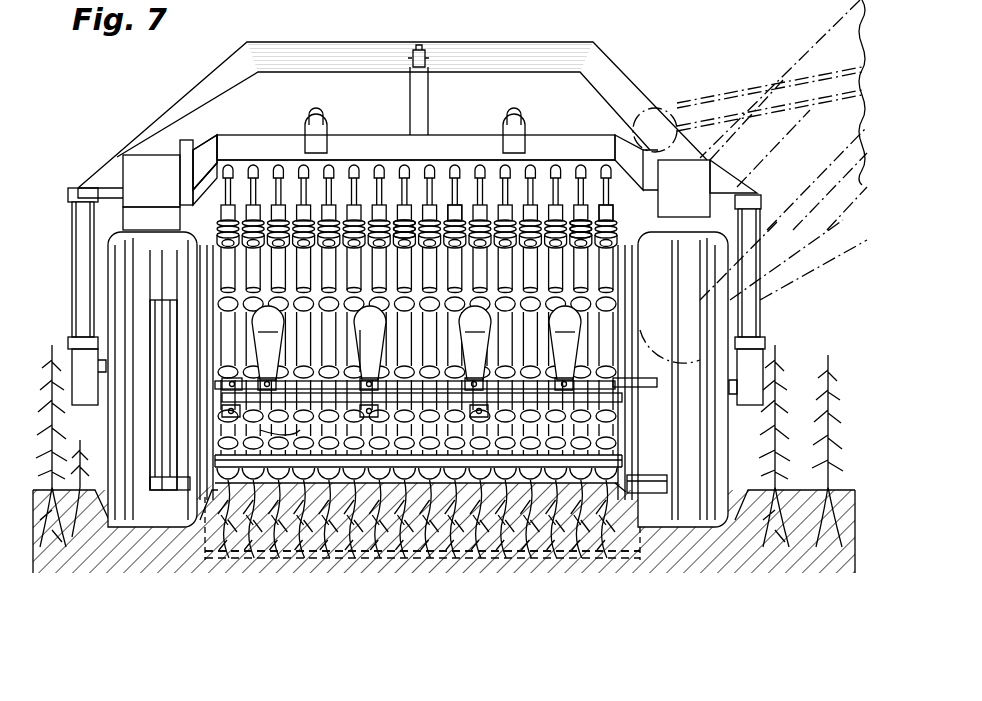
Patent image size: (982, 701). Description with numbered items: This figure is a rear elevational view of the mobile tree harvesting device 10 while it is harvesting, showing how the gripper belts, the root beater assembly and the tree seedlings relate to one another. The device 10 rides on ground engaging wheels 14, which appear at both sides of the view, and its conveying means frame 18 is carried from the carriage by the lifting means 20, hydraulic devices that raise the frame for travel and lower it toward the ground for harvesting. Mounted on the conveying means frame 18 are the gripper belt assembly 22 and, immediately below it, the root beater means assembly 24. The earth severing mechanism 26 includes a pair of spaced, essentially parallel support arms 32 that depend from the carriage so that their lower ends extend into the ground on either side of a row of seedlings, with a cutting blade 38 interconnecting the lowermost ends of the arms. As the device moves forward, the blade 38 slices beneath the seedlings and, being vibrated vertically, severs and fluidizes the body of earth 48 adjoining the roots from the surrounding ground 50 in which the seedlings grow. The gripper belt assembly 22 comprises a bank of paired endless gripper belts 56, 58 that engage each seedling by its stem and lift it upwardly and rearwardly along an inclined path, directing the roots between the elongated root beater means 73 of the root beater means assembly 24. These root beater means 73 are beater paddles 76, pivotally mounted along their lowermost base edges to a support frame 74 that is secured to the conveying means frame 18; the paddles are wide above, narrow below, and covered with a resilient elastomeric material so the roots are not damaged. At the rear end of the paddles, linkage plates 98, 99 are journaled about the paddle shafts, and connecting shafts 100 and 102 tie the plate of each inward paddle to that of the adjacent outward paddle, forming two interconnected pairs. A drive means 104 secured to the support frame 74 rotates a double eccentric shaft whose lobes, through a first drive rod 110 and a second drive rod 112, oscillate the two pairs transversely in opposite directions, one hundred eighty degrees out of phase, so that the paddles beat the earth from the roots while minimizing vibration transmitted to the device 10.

The mobile tree harvesting device 10 is at (175, 100).
The ground engaging wheels 14 is at (127, 540).
The conveying means frame 18 is at (207, 163).
The lifting means 20 is at (757, 316).
The gripper belt assembly 22 is at (258, 255).
The root beater means assembly 24 is at (628, 428).
The earth severing mechanism 26 is at (650, 461).
The support arms 32 is at (180, 527).
The cutting blade 38 is at (233, 557).
The body of earth adjoining the roots 48 is at (373, 553).
The surrounding ground 50 is at (802, 484).
The gripper belt 56 is at (583, 214).
The gripper belt 58 is at (603, 205).
The root beater means 73 is at (393, 341).
The support frame 74 is at (233, 393).
The beater paddles 76 is at (575, 332).
The linkage plate 98 is at (497, 376).
The linkage plate 99 is at (612, 372).
The connecting shaft 100 is at (576, 380).
The connecting shaft 102 is at (300, 358).
The drive means 104 is at (210, 417).
The first drive rod 110 is at (293, 413).
The second drive rod 112 is at (427, 455).